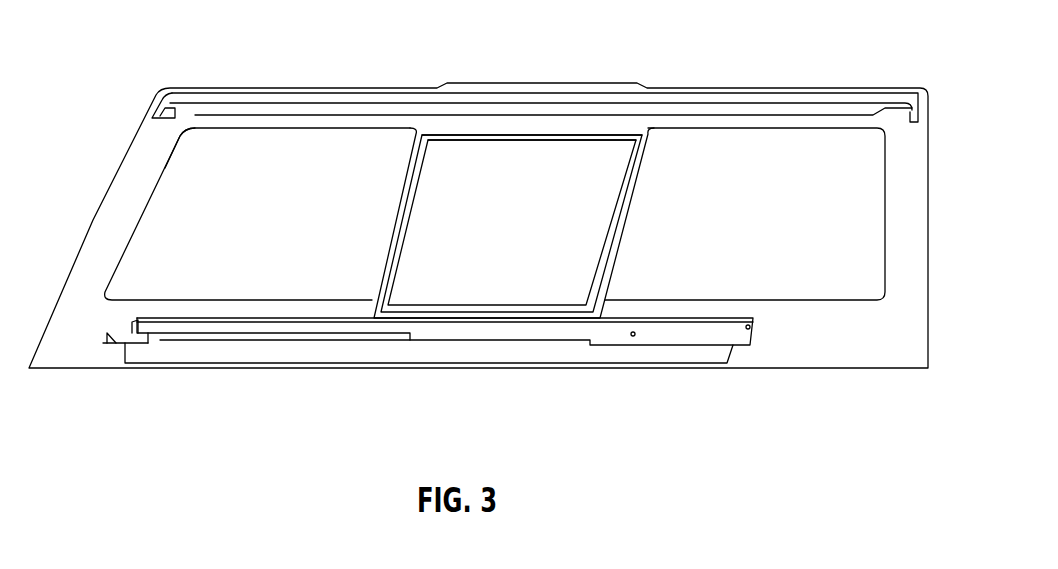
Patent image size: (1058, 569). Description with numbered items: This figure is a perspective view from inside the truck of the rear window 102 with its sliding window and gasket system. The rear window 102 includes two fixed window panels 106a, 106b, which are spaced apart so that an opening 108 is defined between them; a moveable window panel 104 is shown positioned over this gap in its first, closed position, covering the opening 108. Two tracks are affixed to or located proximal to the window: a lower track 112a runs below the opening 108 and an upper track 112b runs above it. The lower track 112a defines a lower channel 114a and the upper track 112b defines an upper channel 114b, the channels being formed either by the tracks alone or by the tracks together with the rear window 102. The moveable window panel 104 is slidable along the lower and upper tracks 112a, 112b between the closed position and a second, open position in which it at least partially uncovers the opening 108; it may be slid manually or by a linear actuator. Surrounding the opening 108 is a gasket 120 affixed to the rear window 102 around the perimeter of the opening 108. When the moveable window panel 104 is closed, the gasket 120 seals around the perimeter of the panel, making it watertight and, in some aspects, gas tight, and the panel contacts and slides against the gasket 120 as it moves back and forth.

The rear window 102 is at (158, 97).
The moveable window panel 104 is at (530, 157).
The window panel 106a is at (240, 175).
The window panel 106b is at (747, 177).
The opening 108 is at (407, 157).
The lower track 112a is at (160, 342).
The upper track 112b is at (207, 121).
The lower channel 114a is at (110, 337).
The upper channel 114b is at (200, 123).
The gasket 120 is at (430, 142).